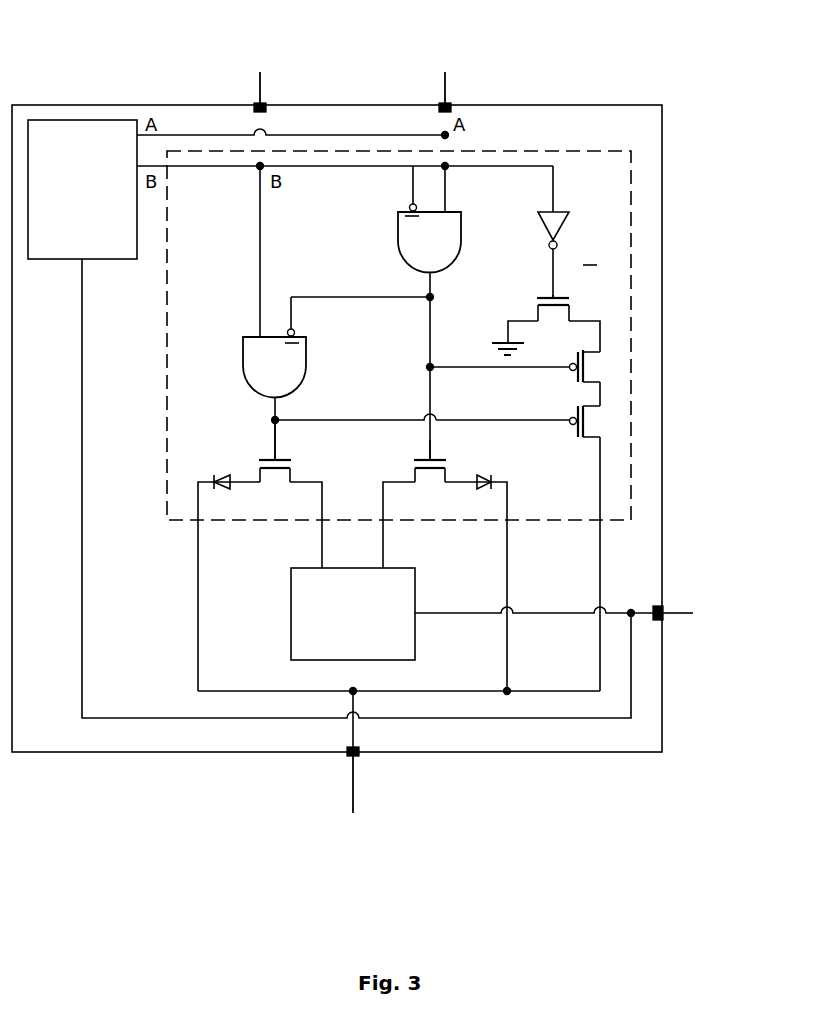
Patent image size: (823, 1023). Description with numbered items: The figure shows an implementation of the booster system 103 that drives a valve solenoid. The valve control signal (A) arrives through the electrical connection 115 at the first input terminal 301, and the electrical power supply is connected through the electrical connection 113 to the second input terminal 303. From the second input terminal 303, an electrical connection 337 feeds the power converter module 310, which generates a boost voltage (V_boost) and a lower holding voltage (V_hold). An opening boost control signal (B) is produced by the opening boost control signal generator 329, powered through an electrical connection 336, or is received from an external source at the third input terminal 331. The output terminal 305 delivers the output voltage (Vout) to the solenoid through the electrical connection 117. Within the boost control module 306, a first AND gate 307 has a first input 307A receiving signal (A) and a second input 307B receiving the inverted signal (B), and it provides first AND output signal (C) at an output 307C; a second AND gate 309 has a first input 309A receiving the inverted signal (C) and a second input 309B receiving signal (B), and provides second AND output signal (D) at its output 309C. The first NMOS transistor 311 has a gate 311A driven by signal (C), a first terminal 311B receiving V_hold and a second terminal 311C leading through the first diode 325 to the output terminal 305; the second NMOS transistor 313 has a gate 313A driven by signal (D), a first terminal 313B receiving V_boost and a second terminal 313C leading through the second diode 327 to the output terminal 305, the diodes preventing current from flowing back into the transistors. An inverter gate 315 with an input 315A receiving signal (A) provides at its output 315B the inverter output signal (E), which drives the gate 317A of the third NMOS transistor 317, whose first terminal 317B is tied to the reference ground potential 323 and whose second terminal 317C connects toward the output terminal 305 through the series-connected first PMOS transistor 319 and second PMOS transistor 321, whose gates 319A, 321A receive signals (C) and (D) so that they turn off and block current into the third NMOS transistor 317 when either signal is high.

The booster system 103 is at (661, 104).
The electrical connection 113 is at (676, 613).
The electrical connection 115 is at (447, 91).
The electrical connection 117 is at (351, 782).
The first input terminal 301 is at (440, 110).
The second input terminal 303 is at (657, 605).
The output terminal 305 is at (362, 748).
The boost control module 306 is at (578, 151).
The first AND gate 307 is at (445, 243).
The first input 307A is at (450, 209).
The second input 307B is at (410, 205).
The output 307C is at (426, 280).
The second AND gate 309 is at (300, 367).
The first input 309A is at (298, 335).
The second input 309B is at (251, 335).
The second AND gate output D 309C is at (269, 400).
The power converter module 310 is at (291, 612).
The first NMOS transistor 311 is at (448, 463).
The gate 311A is at (421, 453).
The first terminal 311B is at (405, 478).
The second terminal 311C is at (455, 480).
The second NMOS transistor 313 is at (295, 463).
The gate 313A is at (268, 453).
The first terminal 313B is at (322, 470).
The second terminal 313C is at (252, 478).
The inverter gate 315 is at (560, 226).
The input 315A is at (558, 208).
The output 315B is at (553, 263).
The third NMOS transistor 317 is at (592, 300).
The gate 317A is at (546, 297).
The first terminal 317B is at (535, 320).
The second terminal 317C is at (580, 318).
The first PMOS transistor 319 is at (592, 347).
The gate 319A is at (541, 371).
The second PMOS transistor 321 is at (588, 402).
The gate 321A is at (541, 426).
The reference ground potential 323 is at (504, 339).
The first diode 325 is at (473, 489).
The second diode 327 is at (231, 489).
The opening boost control signal generator 329 is at (112, 259).
The third input terminal 331 is at (266, 110).
The electrical connection 336 is at (82, 440).
The electrical connection 337 is at (432, 616).